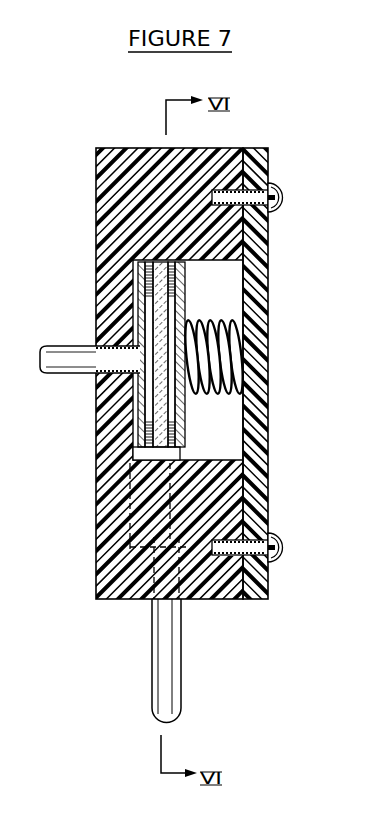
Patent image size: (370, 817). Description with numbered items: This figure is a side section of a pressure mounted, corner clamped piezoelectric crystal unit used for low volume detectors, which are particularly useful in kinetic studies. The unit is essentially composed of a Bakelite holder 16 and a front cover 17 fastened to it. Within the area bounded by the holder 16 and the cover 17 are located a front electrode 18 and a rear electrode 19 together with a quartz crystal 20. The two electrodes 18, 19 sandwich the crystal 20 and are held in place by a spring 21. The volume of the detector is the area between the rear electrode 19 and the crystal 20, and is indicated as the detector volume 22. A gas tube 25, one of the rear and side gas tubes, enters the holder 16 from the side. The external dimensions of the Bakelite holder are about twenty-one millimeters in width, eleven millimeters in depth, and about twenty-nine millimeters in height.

The Bakelite holder 16 is at (100, 230).
The front cover 17 is at (262, 277).
The front electrode 18 is at (185, 279).
The rear electrode 19 is at (141, 296).
The quartz crystal 20 is at (160, 405).
The spring 21 is at (213, 326).
The detector volume 22 is at (150, 320).
The gas tube 25 is at (72, 375).